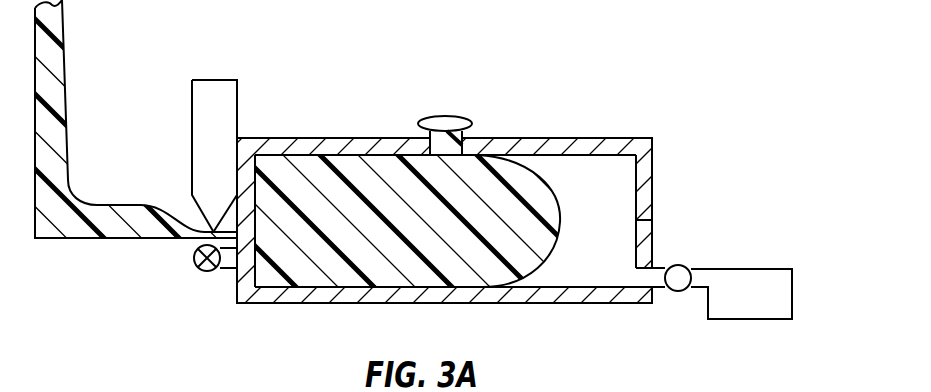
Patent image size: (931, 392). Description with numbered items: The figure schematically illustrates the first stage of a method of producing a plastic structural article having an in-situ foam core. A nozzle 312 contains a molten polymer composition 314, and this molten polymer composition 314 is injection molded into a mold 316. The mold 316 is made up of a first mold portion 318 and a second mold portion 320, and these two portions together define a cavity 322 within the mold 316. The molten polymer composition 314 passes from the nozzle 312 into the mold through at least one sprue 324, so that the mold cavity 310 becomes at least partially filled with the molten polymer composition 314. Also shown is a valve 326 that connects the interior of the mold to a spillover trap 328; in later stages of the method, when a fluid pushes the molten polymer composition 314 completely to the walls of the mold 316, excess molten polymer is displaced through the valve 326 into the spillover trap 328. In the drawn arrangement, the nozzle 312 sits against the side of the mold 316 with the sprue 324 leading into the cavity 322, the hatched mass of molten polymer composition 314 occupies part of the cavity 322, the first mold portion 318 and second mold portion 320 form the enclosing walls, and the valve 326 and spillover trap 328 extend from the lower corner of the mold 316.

The mold cavity 310 is at (691, 79).
The nozzle 312 is at (66, 58).
The molten polymer composition 314 is at (55, 97).
The mold 316 is at (506, 138).
The first mold portion 318 is at (648, 168).
The second mold portion 320 is at (648, 240).
The cavity 322 is at (614, 207).
The sprue 324 is at (236, 249).
The valve 326 is at (680, 292).
The spillover trap 328 is at (752, 297).